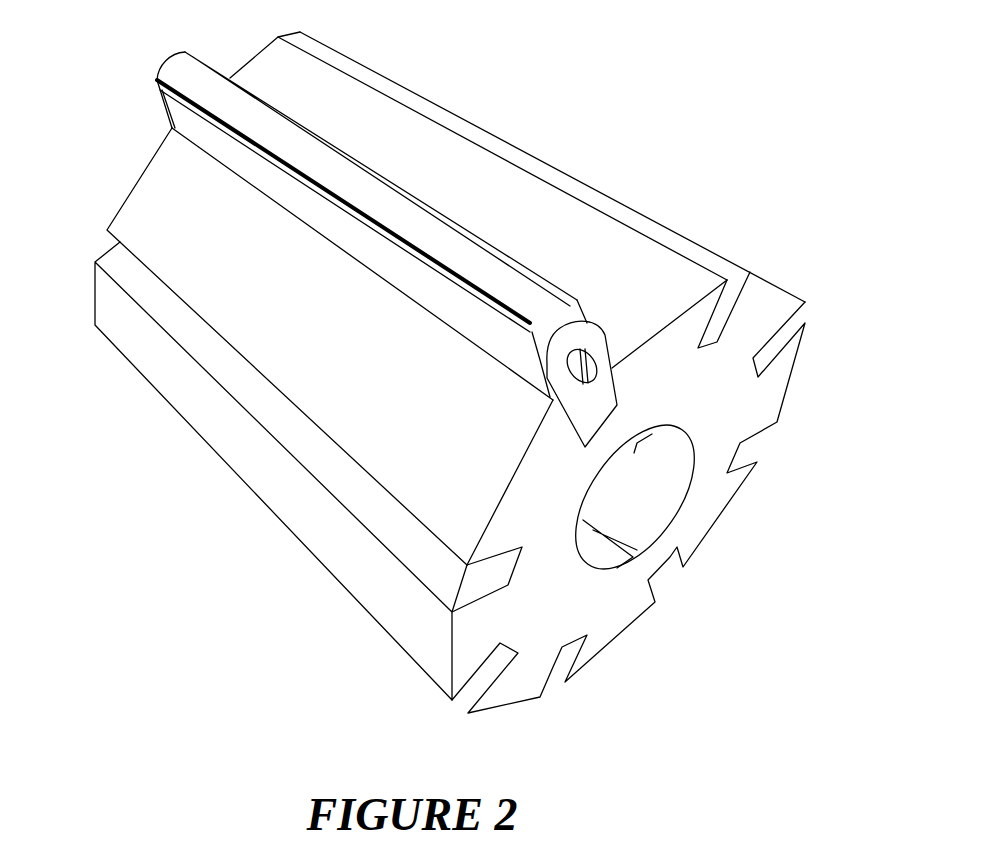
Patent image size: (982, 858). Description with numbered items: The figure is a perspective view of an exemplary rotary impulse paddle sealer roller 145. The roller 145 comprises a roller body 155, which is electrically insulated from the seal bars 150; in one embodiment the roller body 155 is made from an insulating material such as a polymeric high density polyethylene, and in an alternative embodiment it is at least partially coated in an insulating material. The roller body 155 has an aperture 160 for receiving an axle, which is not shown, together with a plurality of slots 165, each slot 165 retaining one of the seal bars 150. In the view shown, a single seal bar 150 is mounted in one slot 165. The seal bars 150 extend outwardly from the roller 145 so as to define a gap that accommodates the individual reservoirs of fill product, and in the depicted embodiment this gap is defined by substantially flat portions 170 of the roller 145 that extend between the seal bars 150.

The roller 145 is at (700, 78).
The seal bar 150 is at (213, 130).
The roller body 155 is at (728, 413).
The aperture 160 is at (655, 507).
The slot 165 is at (612, 368).
The flat portion 170 is at (462, 152).